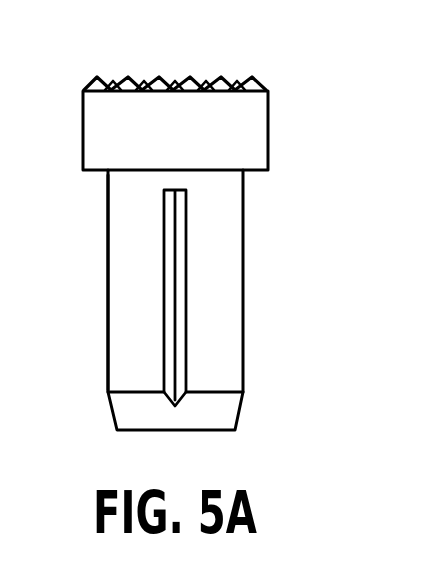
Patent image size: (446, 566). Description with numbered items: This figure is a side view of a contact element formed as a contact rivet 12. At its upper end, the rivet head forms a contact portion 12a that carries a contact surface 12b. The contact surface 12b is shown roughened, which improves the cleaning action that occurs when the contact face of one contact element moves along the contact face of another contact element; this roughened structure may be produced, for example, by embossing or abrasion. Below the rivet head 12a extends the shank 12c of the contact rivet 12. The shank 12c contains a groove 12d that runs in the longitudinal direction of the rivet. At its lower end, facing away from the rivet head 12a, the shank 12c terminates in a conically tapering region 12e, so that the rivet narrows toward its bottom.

The contact rivet 12 is at (233, 303).
The contact portion 12a is at (258, 125).
The contact surface 12b is at (176, 82).
The shank 12c is at (108, 229).
The groove 12d is at (170, 295).
The conically tapering region 12e is at (110, 410).